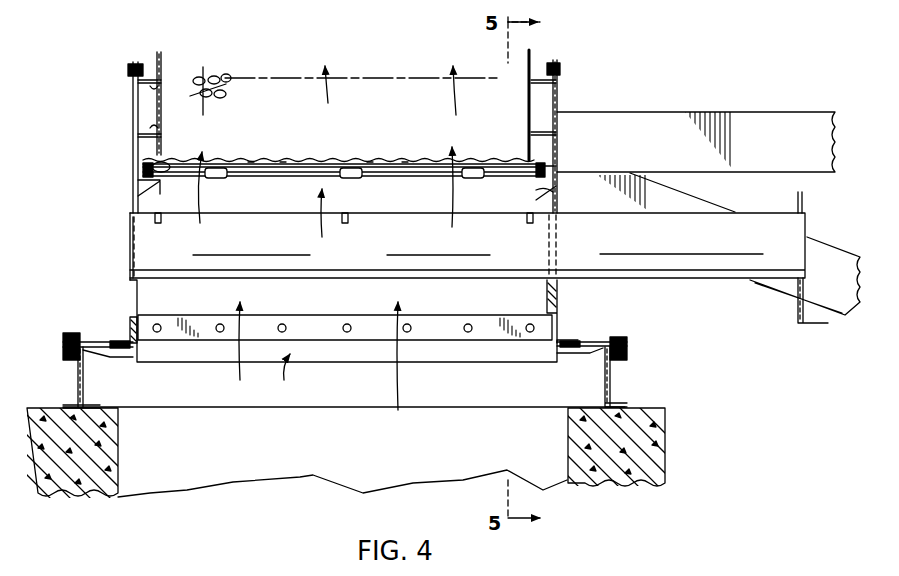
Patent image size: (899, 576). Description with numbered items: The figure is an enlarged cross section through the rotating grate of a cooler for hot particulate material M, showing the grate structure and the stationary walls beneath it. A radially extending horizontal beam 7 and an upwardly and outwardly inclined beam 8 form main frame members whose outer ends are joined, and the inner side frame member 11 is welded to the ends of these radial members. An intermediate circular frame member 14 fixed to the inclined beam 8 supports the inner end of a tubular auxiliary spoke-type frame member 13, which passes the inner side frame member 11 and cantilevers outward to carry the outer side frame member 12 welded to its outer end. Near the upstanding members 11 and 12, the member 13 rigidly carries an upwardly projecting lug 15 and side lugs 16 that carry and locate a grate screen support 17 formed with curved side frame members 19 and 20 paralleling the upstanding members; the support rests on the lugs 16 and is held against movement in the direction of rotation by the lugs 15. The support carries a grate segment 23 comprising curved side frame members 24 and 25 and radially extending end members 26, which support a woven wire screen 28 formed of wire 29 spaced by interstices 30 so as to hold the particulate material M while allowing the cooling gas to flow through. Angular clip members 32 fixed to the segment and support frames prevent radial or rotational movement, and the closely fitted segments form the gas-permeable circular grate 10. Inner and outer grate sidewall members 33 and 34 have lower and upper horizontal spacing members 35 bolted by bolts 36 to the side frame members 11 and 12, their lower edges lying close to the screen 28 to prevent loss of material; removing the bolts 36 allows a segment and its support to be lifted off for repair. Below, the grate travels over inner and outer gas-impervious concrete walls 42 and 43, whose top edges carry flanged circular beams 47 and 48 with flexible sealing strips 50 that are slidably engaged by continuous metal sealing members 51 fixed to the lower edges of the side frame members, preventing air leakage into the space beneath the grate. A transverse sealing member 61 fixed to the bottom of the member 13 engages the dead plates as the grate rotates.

The horizontal beam 7 is at (752, 115).
The inclined beam 8 is at (836, 252).
The gas permeable grate 10 is at (333, 155).
The inner side frame member 11 is at (560, 101).
The outer side frame member 12 is at (141, 108).
The auxiliary spoke-type frame member 13 is at (668, 280).
The intermediate circular frame member 14 is at (810, 326).
The upwardly projecting lug 15 is at (140, 204).
The side lug 16 is at (157, 224).
The grate screen support 17 is at (275, 198).
The curved side frame member 19 is at (553, 191).
The curved side frame member 20 is at (140, 183).
The grate segment 23 is at (283, 158).
The curved side frame member 24 is at (556, 167).
The curved side frame member 25 is at (143, 165).
The radially extending end member 26 is at (250, 180).
The woven wire screen 28 is at (370, 158).
The wire 29 is at (405, 158).
The interstice 30 is at (254, 158).
The angular clip member 32 is at (345, 179).
The inner grate sidewall member 33 is at (531, 56).
The outer grate sidewall member 34 is at (163, 62).
The horizontal spacing member 35 is at (136, 82).
The bolt 36 is at (132, 65).
The inner gas impervious wall 42 is at (667, 462).
The outer gas impervious wall 43 is at (120, 468).
The inner flanged circular beam 47 is at (612, 395).
The outer flanged circular beam 48 is at (80, 380).
The flexible sealing strip 50 is at (98, 340).
The metal sealing member 51 is at (120, 360).
The transverse sealing member 61 is at (287, 362).
The hot particulate material M is at (218, 80).